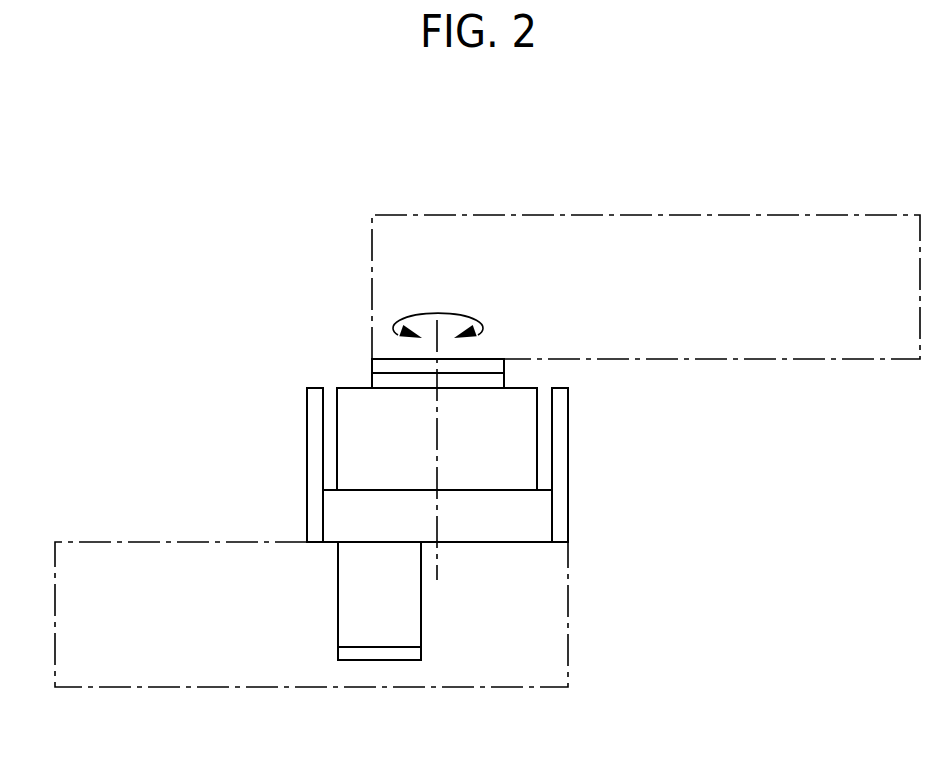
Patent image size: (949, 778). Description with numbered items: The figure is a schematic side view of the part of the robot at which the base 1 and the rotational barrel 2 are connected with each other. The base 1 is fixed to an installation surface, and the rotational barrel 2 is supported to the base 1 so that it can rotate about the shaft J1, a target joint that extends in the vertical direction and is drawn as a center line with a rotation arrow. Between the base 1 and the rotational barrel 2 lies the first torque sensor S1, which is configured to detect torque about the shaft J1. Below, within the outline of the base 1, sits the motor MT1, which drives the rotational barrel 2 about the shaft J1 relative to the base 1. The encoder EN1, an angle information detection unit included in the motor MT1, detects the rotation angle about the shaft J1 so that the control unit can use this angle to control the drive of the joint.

The base 1 is at (163, 542).
The rotational barrel 2 is at (772, 360).
The first torque sensor S1 is at (371, 366).
The shaft J1 is at (437, 425).
The motor MT1 is at (422, 622).
The encoder EN1 is at (380, 660).